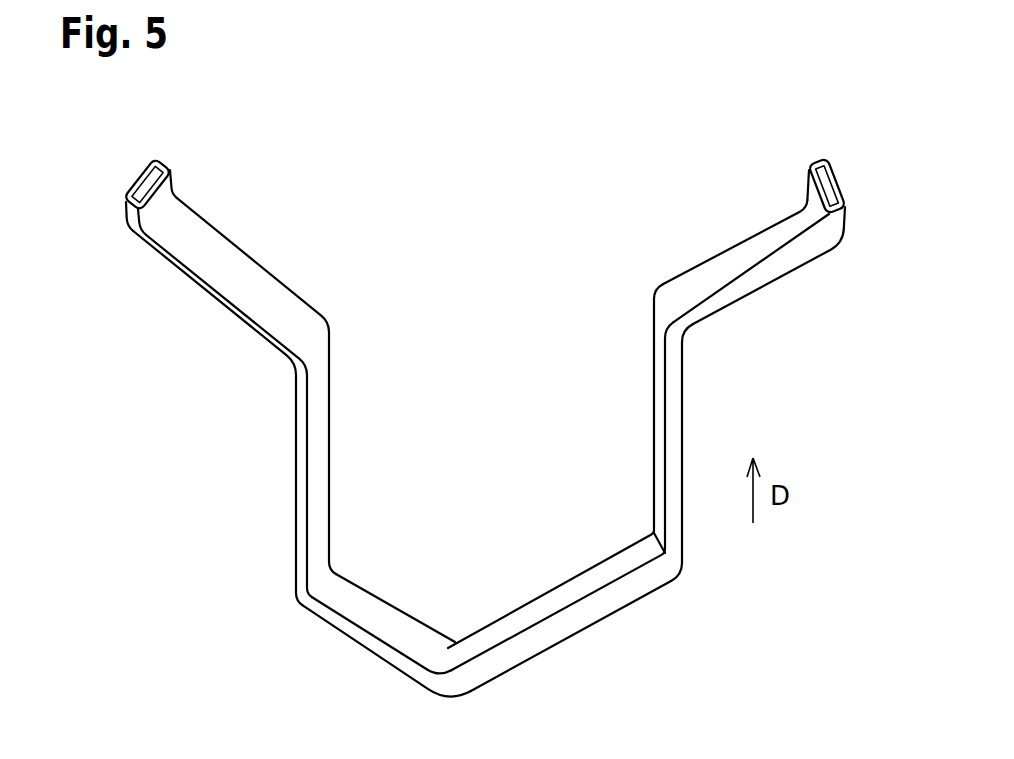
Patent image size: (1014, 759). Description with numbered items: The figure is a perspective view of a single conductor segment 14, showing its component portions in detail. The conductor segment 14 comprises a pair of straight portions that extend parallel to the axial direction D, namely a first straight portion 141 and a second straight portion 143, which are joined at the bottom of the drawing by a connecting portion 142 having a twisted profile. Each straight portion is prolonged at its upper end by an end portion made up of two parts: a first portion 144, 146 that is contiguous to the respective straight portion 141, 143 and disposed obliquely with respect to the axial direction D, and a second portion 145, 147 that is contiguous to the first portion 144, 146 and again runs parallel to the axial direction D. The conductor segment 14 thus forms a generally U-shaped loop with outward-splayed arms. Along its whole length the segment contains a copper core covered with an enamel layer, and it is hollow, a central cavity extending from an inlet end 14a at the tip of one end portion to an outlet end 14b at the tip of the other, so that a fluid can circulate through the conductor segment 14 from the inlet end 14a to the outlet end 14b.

The conductor segment 14 is at (621, 201).
The inlet end 14a is at (139, 161).
The outlet end 14b is at (839, 167).
The first straight portion 141 is at (300, 443).
The connecting portion 142 is at (558, 630).
The second straight portion 143 is at (672, 417).
The first portion of end portion 144 is at (254, 294).
The second portion of end portion 145 is at (127, 214).
The first portion of end portion 146 is at (742, 276).
The second portion of end portion 147 is at (850, 216).